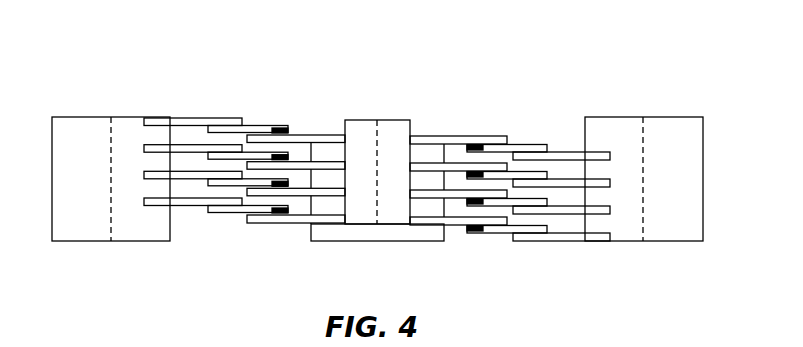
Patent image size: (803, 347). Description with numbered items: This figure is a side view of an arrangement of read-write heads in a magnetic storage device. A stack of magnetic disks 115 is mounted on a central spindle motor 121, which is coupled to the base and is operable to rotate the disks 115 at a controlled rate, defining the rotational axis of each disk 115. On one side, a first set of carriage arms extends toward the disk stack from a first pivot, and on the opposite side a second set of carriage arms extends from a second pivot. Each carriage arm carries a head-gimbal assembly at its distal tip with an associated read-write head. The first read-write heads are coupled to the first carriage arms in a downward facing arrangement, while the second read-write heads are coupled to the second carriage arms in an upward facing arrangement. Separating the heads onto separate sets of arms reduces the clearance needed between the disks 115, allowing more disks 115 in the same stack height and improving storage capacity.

The magnetic disk 115 is at (455, 223).
The spindle motor 121 is at (368, 205).